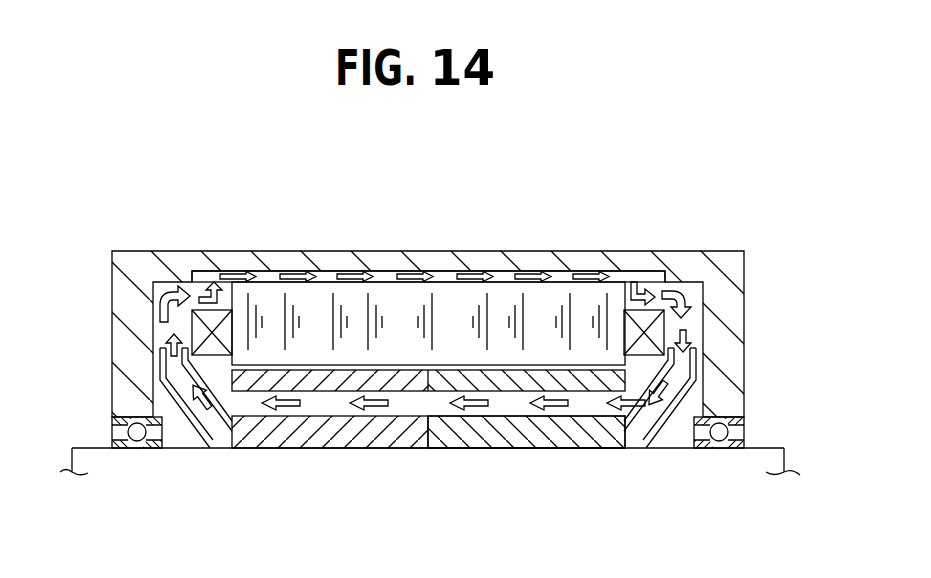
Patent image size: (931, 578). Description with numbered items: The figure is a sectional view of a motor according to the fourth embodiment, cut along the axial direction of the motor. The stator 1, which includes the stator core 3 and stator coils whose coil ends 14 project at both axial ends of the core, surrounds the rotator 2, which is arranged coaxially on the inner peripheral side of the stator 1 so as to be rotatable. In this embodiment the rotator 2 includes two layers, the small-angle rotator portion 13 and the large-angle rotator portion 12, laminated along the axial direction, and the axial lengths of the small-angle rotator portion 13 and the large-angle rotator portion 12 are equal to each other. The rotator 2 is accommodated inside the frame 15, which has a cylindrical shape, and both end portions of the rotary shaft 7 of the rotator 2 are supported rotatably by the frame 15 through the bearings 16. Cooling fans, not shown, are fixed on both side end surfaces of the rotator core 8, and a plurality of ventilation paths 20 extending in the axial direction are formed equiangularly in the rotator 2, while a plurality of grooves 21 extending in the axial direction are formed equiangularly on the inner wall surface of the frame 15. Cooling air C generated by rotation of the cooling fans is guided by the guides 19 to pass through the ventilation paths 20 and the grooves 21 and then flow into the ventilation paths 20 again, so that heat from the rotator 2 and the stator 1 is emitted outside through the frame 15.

The stator 1 is at (558, 300).
The rotator 2 is at (342, 447).
The stator core 3 is at (327, 305).
The rotary shaft 7 is at (755, 450).
The rotator core 8 is at (572, 435).
The large-angle rotator portion 12 is at (378, 432).
The small-angle rotator portion 13 is at (508, 435).
The coil ends 14 is at (200, 330).
The frame 15 is at (138, 263).
The bearings 16 is at (118, 425).
The guides 19 is at (190, 448).
The ventilation paths 20 is at (440, 408).
The grooves 21 is at (427, 273).
The cooling air C is at (280, 450).